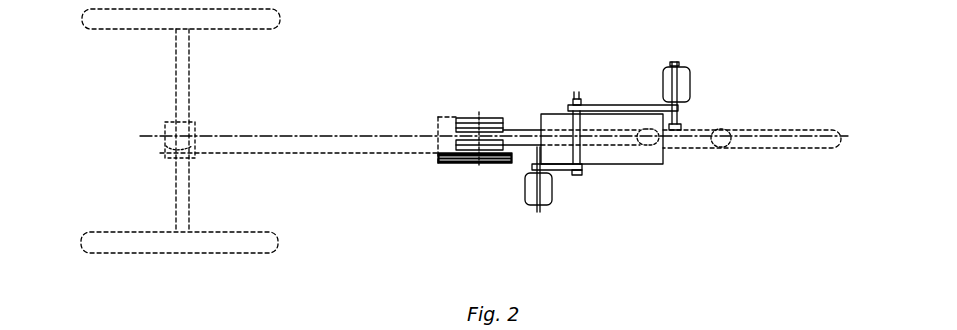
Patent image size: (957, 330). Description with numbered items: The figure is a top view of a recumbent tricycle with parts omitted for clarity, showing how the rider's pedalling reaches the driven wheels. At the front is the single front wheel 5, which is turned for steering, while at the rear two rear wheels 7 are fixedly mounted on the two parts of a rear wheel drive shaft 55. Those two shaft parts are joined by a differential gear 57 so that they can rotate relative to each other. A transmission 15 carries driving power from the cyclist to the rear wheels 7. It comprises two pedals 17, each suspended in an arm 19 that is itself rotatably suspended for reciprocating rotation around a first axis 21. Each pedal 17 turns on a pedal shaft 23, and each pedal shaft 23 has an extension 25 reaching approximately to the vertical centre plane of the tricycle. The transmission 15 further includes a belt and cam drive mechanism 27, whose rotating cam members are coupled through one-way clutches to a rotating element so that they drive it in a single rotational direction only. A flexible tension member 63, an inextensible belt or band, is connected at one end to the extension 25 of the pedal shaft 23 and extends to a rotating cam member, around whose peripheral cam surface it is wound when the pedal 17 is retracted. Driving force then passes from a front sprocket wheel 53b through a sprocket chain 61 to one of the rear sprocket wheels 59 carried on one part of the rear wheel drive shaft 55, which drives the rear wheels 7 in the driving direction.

The front wheel 5 is at (778, 131).
The rear wheels 7 is at (268, 18).
The transmission 15 is at (533, 78).
The pedals 17 is at (683, 72).
The arm 19 is at (627, 106).
The first axis 21 is at (578, 98).
The pedal shafts 23 is at (678, 88).
The extension 25 is at (679, 124).
The belt and cam drive mechanism 27 is at (467, 107).
The front sprocket wheel 53b is at (447, 162).
The rear wheel drive shaft 55 is at (185, 73).
The differential gear 57 is at (191, 128).
The rear sprocket wheels 59 is at (163, 150).
The sprocket chain 61 is at (342, 155).
The flexible tension member 63 is at (523, 120).